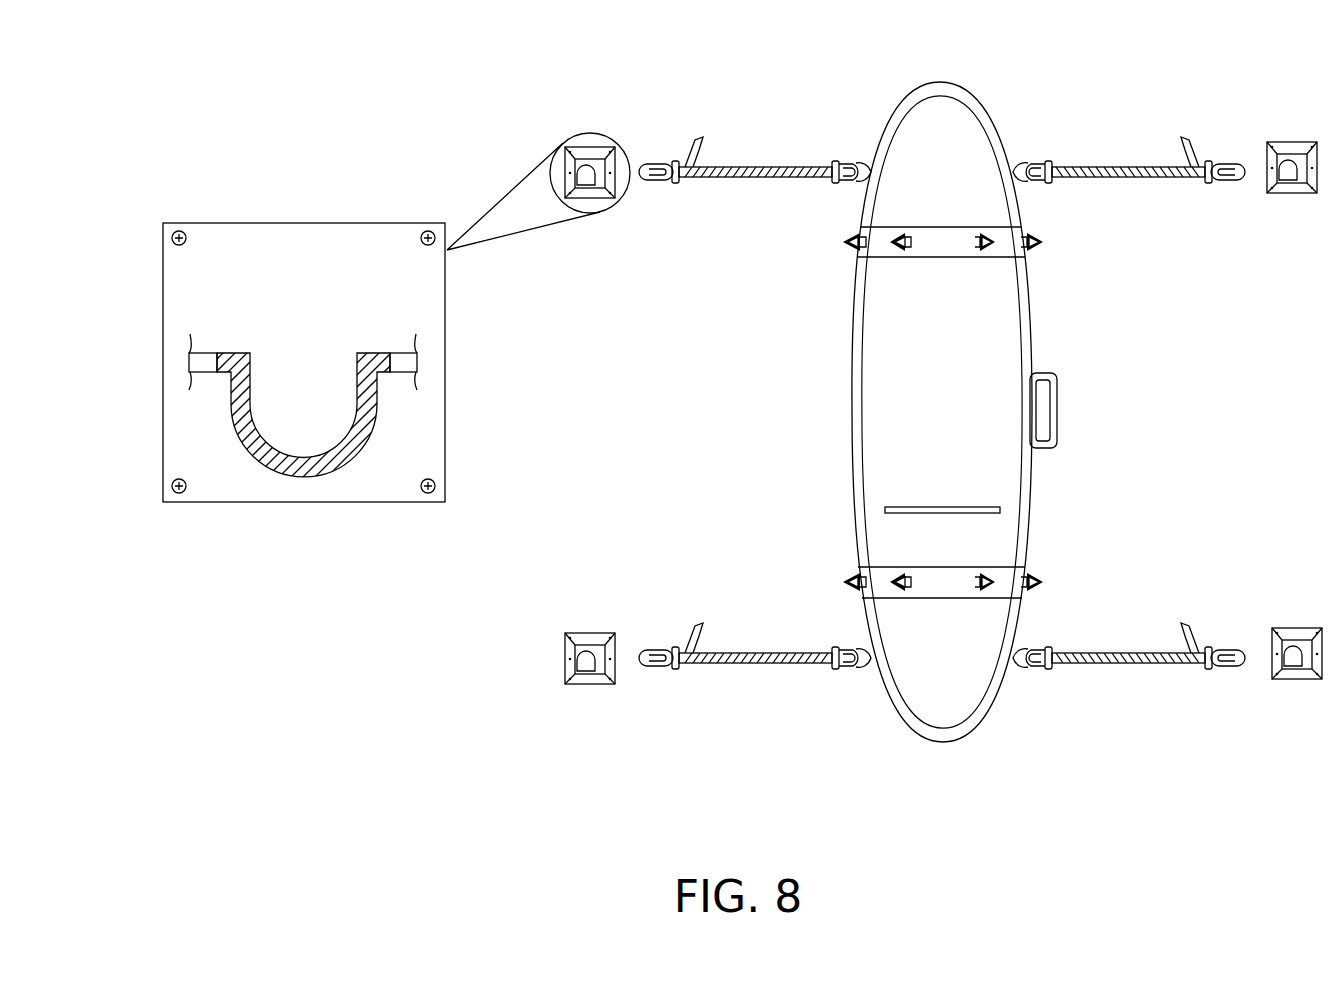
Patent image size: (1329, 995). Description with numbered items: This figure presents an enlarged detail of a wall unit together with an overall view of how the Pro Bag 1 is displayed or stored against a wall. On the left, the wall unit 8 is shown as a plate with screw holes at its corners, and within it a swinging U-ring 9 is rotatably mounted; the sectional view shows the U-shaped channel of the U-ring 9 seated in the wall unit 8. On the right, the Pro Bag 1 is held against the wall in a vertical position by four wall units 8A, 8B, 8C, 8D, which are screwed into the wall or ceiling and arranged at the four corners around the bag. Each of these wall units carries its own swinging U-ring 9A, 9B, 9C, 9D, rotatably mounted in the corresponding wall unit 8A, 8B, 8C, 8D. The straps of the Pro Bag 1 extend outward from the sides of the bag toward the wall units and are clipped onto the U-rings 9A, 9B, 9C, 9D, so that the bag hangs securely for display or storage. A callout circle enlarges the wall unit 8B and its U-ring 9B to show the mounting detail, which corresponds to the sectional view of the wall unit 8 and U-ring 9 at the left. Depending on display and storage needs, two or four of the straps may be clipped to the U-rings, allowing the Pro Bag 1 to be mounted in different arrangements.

The Pro Bag 1 is at (943, 88).
The wall unit 8 is at (440, 357).
The U-ring 9 is at (304, 478).
The wall unit 8A is at (597, 633).
The wall unit 8B is at (596, 148).
The wall unit 8C is at (1294, 143).
The wall unit 8D is at (1297, 628).
The U-ring 9A is at (597, 672).
The U-ring 9B is at (598, 186).
The U-ring 9C is at (1296, 181).
The U-ring 9D is at (1298, 667).